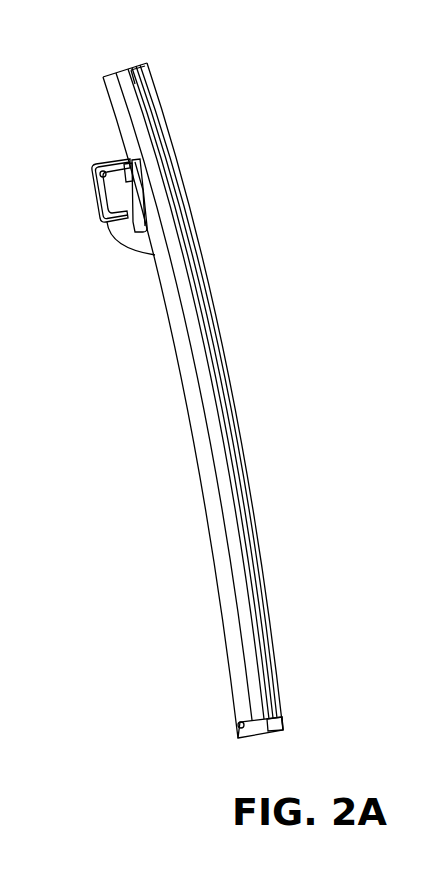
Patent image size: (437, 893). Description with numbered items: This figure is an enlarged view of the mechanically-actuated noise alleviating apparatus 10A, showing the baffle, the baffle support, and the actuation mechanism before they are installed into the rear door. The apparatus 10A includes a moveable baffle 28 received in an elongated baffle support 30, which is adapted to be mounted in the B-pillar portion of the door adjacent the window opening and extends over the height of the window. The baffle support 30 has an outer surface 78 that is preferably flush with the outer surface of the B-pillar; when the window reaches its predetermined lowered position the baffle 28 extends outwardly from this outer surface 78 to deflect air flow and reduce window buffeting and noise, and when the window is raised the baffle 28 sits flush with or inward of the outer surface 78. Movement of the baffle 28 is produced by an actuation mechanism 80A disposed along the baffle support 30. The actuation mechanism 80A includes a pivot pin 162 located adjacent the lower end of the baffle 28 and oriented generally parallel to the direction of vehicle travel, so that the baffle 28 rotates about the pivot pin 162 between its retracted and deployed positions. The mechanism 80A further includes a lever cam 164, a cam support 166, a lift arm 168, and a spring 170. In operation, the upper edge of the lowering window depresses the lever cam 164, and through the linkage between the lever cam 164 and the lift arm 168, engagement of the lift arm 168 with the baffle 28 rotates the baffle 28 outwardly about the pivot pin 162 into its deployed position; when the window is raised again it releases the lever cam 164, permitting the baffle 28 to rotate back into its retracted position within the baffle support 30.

The noise alleviating apparatus 10A is at (75, 116).
The baffle 28 is at (153, 100).
The baffle support 30 is at (270, 537).
The outer surface 78 is at (213, 431).
The actuation mechanism 80A is at (343, 702).
The pivot pin 162 is at (283, 712).
The lever cam 164 is at (125, 205).
The cam support 166 is at (153, 253).
The lift arm 168 is at (135, 178).
The spring 170 is at (120, 161).